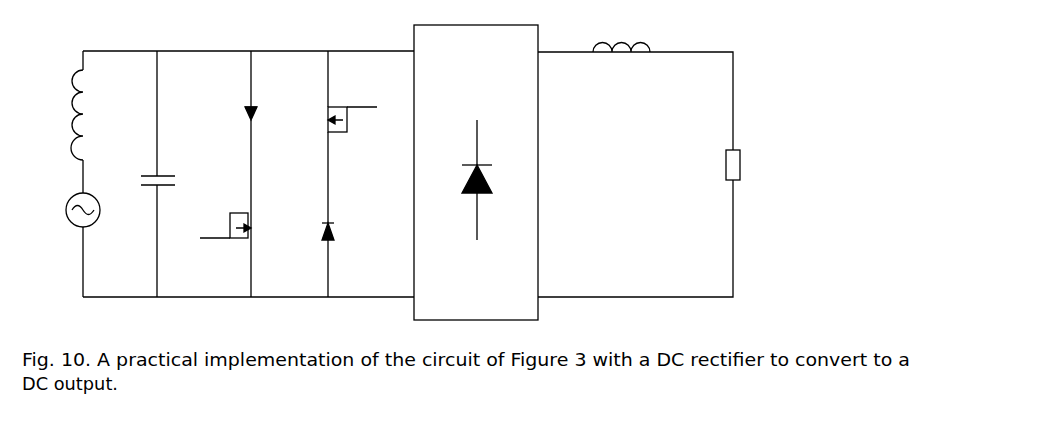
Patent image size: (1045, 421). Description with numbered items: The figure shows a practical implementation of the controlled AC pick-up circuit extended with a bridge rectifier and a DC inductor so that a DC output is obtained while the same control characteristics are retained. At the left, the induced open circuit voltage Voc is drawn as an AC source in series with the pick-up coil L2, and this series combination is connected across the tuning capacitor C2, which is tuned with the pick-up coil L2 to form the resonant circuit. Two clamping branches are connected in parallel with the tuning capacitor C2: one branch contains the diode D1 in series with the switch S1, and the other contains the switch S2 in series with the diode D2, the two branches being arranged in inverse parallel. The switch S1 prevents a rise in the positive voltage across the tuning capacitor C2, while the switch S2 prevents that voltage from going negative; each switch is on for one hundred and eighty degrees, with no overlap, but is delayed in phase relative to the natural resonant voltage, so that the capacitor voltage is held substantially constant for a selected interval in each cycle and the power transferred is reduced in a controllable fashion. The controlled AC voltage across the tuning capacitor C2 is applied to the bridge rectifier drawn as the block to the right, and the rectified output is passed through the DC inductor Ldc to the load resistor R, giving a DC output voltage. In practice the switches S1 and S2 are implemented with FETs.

The open circuit voltage Voc is at (63, 211).
The pick-up coil L2 is at (98, 115).
The tuning capacitor C2 is at (178, 187).
The diode D1 is at (270, 117).
The switch S1 is at (240, 241).
The switch S2 is at (352, 126).
The diode D2 is at (346, 238).
The DC inductor Ldc is at (621, 68).
The load resistor R is at (746, 166).